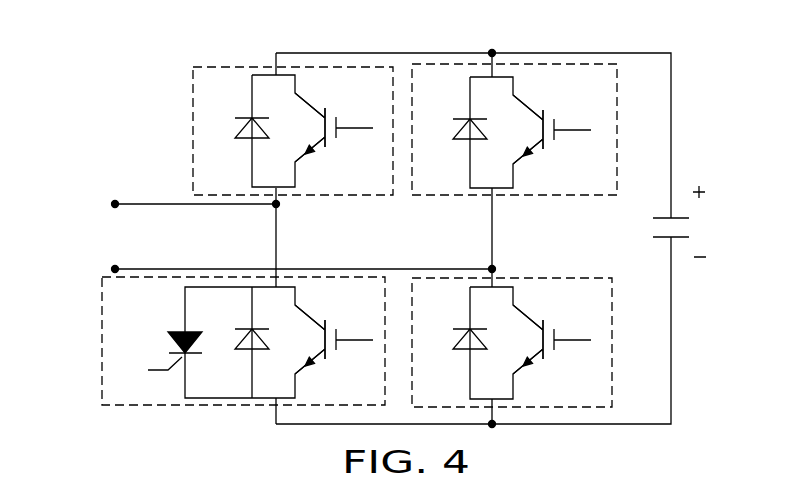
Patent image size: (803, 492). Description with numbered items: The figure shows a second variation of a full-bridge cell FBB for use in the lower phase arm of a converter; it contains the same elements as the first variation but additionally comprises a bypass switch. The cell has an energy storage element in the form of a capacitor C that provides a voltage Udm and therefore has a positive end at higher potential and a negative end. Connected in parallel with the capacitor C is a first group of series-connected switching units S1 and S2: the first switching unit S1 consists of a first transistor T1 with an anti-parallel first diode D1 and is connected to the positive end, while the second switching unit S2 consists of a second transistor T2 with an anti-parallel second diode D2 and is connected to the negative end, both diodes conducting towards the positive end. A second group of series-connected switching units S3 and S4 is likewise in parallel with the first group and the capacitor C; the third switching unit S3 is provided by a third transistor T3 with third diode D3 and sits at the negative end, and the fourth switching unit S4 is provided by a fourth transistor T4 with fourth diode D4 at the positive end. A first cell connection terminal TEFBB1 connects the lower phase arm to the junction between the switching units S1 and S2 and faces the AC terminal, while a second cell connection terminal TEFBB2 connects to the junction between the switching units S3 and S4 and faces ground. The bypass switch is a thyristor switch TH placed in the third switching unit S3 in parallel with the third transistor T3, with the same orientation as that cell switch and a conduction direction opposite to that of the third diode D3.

The full-bridge cell FBB is at (148, 83).
The first cell connection terminal TEFBB1 is at (260, 252).
The second cell connection terminal TEFBB2 is at (159, 179).
The first switching unit S1 is at (514, 158).
The second switching unit S2 is at (512, 311).
The third switching unit S3 is at (243, 369).
The fourth switching unit S4 is at (293, 160).
The first anti-parallel diode D1 is at (456, 116).
The second anti-parallel diode D2 is at (456, 325).
The third diode D3 is at (242, 325).
The fourth diode D4 is at (234, 116).
The first transistor T1 is at (552, 129).
The second transistor T2 is at (552, 339).
The third transistor T3 is at (334, 336).
The fourth transistor T4 is at (334, 127).
The thyristor switch TH is at (164, 345).
The capacitor C is at (657, 225).
The voltage Udm is at (720, 221).